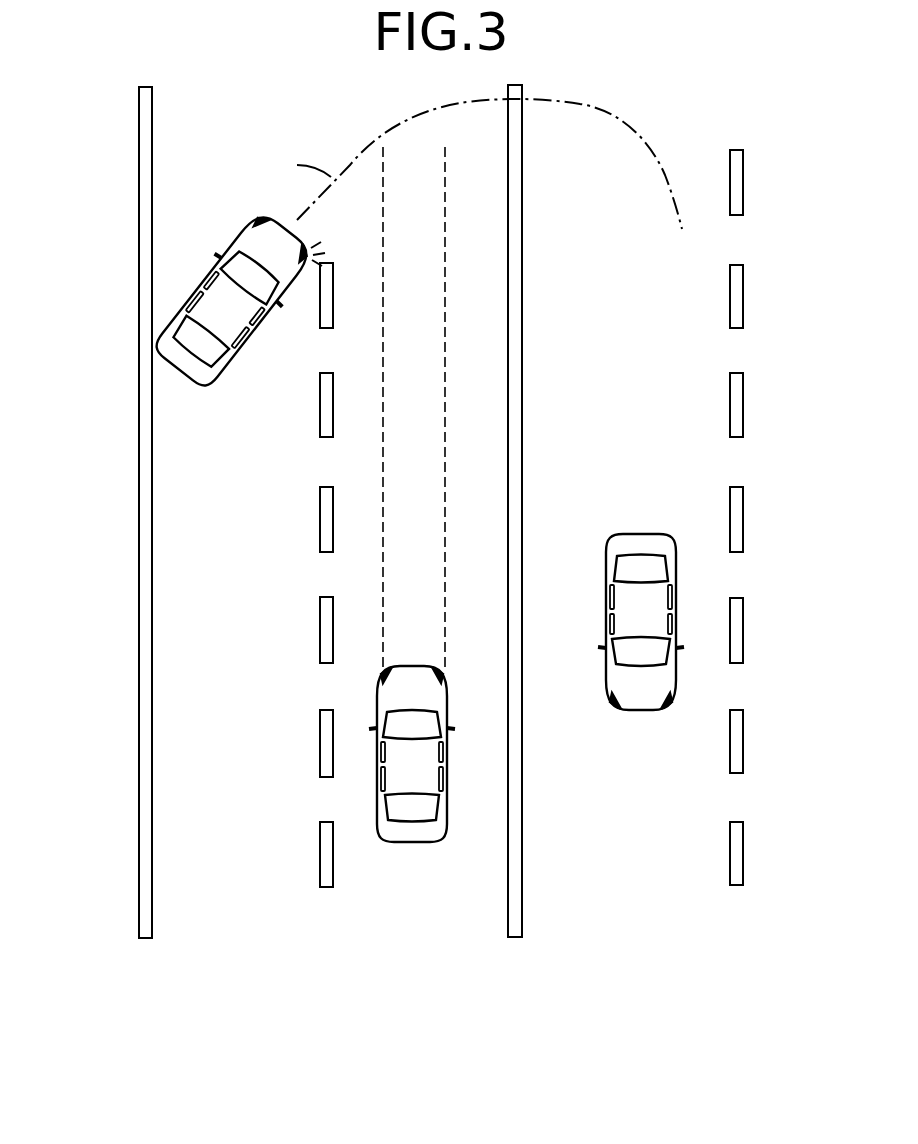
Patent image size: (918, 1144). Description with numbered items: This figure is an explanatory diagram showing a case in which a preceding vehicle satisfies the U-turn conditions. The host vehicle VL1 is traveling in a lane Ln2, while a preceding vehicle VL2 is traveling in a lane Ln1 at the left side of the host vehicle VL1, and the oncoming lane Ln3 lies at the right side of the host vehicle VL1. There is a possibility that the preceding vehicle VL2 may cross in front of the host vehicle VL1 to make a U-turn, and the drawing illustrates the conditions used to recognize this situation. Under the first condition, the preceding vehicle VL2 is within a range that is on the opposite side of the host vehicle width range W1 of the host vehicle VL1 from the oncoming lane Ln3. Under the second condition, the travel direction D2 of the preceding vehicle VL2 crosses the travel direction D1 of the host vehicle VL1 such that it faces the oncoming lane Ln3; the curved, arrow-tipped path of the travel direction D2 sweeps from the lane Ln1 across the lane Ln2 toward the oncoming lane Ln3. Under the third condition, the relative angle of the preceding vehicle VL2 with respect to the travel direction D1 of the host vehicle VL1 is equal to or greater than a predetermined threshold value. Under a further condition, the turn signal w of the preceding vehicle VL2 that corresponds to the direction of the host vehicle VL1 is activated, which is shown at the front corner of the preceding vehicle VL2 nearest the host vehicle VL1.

The host vehicle VL1 is at (379, 756).
The preceding vehicle VL2 is at (186, 300).
The lane Ln1 is at (254, 992).
The lane Ln2 is at (421, 992).
The oncoming lane Ln3 is at (588, 992).
The host vehicle width range W1 is at (444, 200).
The travel direction D1 is at (297, 220).
The travel direction D2 is at (694, 212).
The turn signal w is at (300, 259).